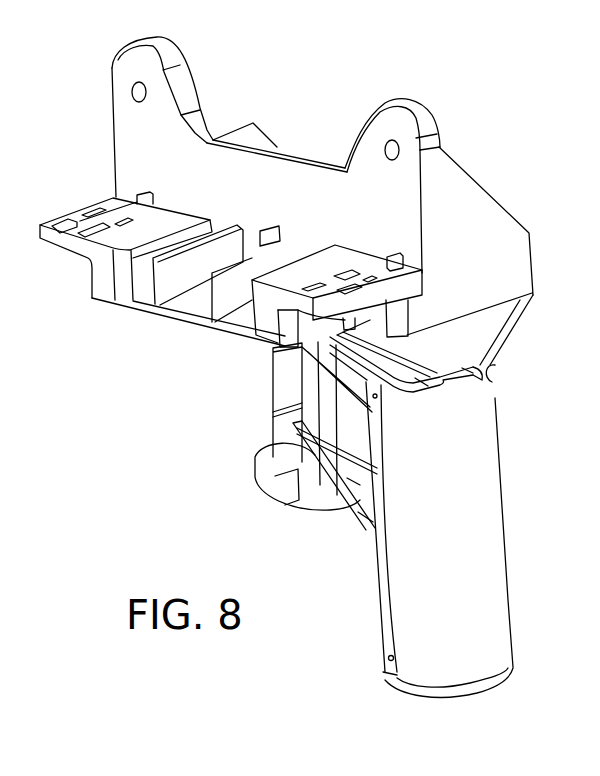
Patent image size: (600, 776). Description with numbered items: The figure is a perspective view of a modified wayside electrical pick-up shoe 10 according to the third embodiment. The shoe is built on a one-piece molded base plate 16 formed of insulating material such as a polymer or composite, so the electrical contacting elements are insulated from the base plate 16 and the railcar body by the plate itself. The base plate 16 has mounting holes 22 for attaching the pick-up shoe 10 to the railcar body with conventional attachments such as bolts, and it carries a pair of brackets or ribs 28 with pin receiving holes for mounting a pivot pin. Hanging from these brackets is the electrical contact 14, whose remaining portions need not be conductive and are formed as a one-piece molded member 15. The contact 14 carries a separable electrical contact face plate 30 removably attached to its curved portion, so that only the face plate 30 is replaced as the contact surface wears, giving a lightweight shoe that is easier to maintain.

The modified pick-up shoe 10 is at (133, 371).
The electrical contact 14 is at (325, 516).
The one-piece molded member 15 is at (496, 365).
The molded base plate 16 is at (289, 153).
The mounting holes 22 is at (135, 80).
The brackets or ribs 28 is at (272, 335).
The electrical contact face plate 30 is at (450, 545).